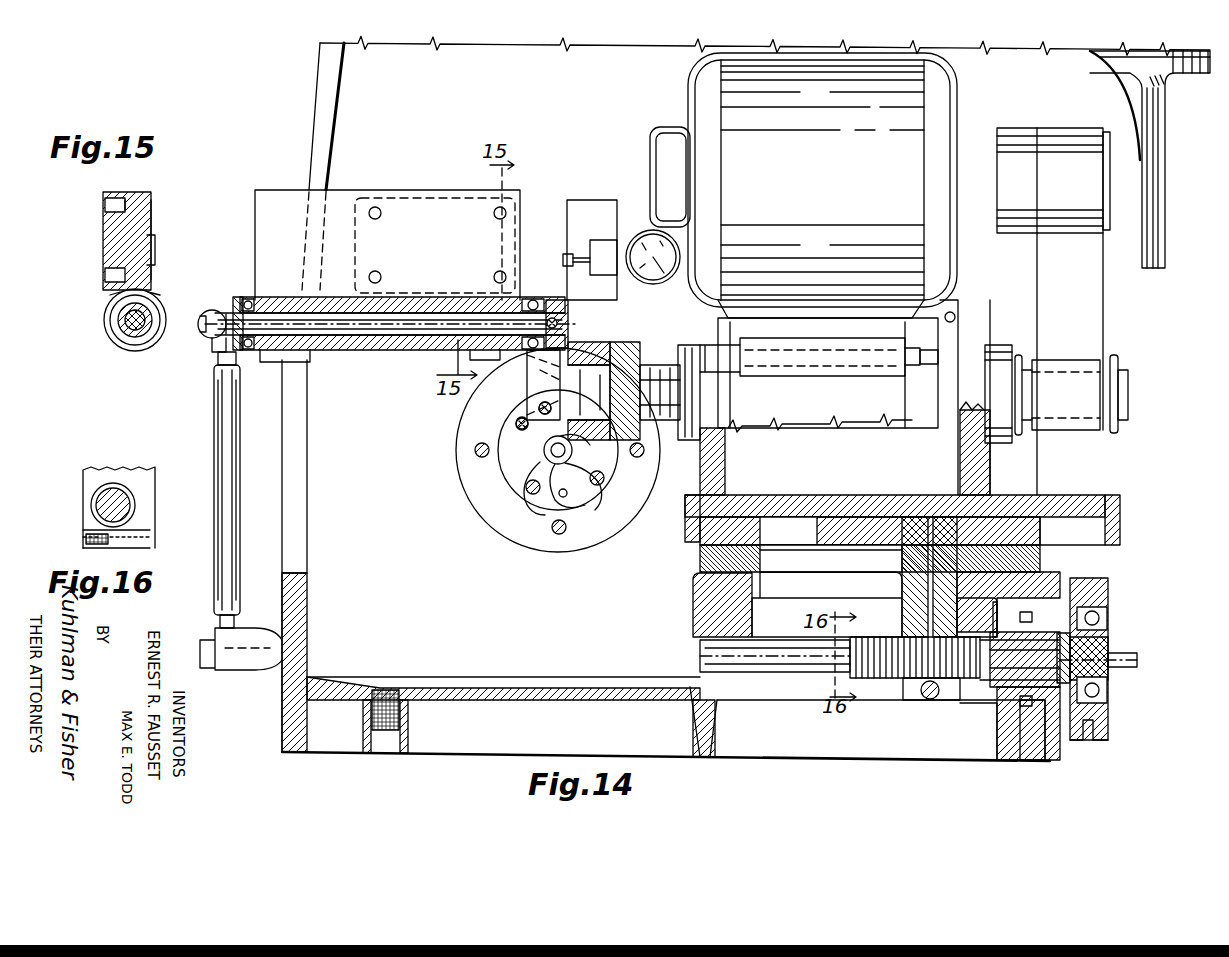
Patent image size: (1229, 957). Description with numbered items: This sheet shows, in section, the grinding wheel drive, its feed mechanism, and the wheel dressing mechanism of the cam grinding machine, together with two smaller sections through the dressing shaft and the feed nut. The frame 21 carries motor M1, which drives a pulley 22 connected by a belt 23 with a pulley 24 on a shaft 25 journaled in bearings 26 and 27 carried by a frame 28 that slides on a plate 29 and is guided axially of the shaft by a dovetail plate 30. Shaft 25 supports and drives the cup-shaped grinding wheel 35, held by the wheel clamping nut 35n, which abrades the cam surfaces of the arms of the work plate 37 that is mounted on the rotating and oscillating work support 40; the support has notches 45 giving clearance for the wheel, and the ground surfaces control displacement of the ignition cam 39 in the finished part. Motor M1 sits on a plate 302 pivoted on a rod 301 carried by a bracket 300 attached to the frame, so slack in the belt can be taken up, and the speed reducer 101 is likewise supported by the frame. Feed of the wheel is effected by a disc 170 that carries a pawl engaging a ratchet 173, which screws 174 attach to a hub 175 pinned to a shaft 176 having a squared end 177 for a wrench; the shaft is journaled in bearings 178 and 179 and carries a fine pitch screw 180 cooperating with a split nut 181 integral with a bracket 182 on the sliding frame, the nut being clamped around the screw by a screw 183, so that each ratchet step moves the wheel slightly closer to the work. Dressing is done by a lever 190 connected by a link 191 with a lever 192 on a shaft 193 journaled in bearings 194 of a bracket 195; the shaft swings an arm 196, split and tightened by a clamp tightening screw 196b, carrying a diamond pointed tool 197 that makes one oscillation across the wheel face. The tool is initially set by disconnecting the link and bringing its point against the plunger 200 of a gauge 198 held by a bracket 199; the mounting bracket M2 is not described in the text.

In FIG. 14, the frame 21 is at (314, 116).
In FIG. 14, the pulley 22 is at (1020, 118).
In FIG. 14, the belt 23 is at (1106, 300).
In FIG. 14, the pulley 24 is at (1112, 432).
In FIG. 14, the shaft 25 is at (652, 365).
In FIG. 14, the bearing 26 is at (1000, 443).
In FIG. 14, the bearing 27 is at (690, 440).
In FIG. 14, the frame 28 is at (1060, 495).
In FIG. 14, the plate 29 is at (1040, 563).
In FIG. 14, the dovetail plate 30 is at (1040, 533).
In FIG. 14, the cup-shaped grinding wheel 35 is at (628, 447).
In FIG. 14, the wheel clamping nut 35n is at (640, 335).
In FIG. 14, the plate 37 is at (548, 455).
In FIG. 14, the cam 39 is at (588, 480).
In FIG. 14, the work support 40 is at (548, 496).
In FIG. 14, the notches 45 is at (615, 472).
In FIG. 14, the speed reducer 101 is at (1148, 128).
In FIG. 14, the disc 170 is at (1103, 582).
In FIG. 14, the ratchet 173 is at (1092, 722).
In FIG. 14, the screws 174 is at (1107, 620).
In FIG. 14, the hub 175 is at (1109, 645).
In FIG. 14, the shaft 176 is at (1025, 660).
In FIG. 16, the shaft 176 is at (102, 502).
In FIG. 14, the squared end 177 is at (1138, 660).
In FIG. 14, the bearing 178 is at (1028, 680).
In FIG. 14, the bearing 179 is at (755, 672).
In FIG. 14, the fine pitch screw 180 is at (884, 680).
In FIG. 16, the fine pitch screw 180 is at (113, 483).
In FIG. 14, the split nut 181 is at (950, 700).
In FIG. 16, the split nut 181 is at (142, 518).
In FIG. 14, the bracket 182 is at (800, 553).
In FIG. 16, the bracket 182 is at (185, 458).
In FIG. 14, the screw 183 is at (922, 700).
In FIG. 16, the screw 183 is at (150, 545).
In FIG. 14, the lever 190 is at (266, 625).
In FIG. 14, the link 191 is at (240, 422).
In FIG. 14, the lever 192 is at (243, 296).
In FIG. 14, the shaft 193 is at (400, 340).
In FIG. 15, the shaft 193 is at (128, 325).
In FIG. 14, the bearings 194 is at (262, 297).
In FIG. 15, the bearings 194 is at (118, 318).
In FIG. 14, the bracket 195 is at (326, 350).
In FIG. 15, the bracket 195 is at (132, 345).
In FIG. 14, the arm 196 is at (566, 305).
In FIG. 14, the clamp tightening screw 196b is at (516, 426).
In FIG. 14, the diamond pointed tool 197 is at (538, 406).
In FIG. 14, the gauge 198 is at (647, 231).
In FIG. 14, the bracket 199 is at (590, 200).
In FIG. 15, the bracket 199 is at (103, 232).
In FIG. 14, the plunger 200 is at (572, 252).
In FIG. 14, the bracket 300 is at (940, 402).
In FIG. 14, the rod 301 is at (935, 360).
In FIG. 14, the plate 302 is at (860, 325).
In FIG. 14, the electric motor M1 is at (960, 70).
In FIG. 14, the motor bracket M2 is at (1170, 76).